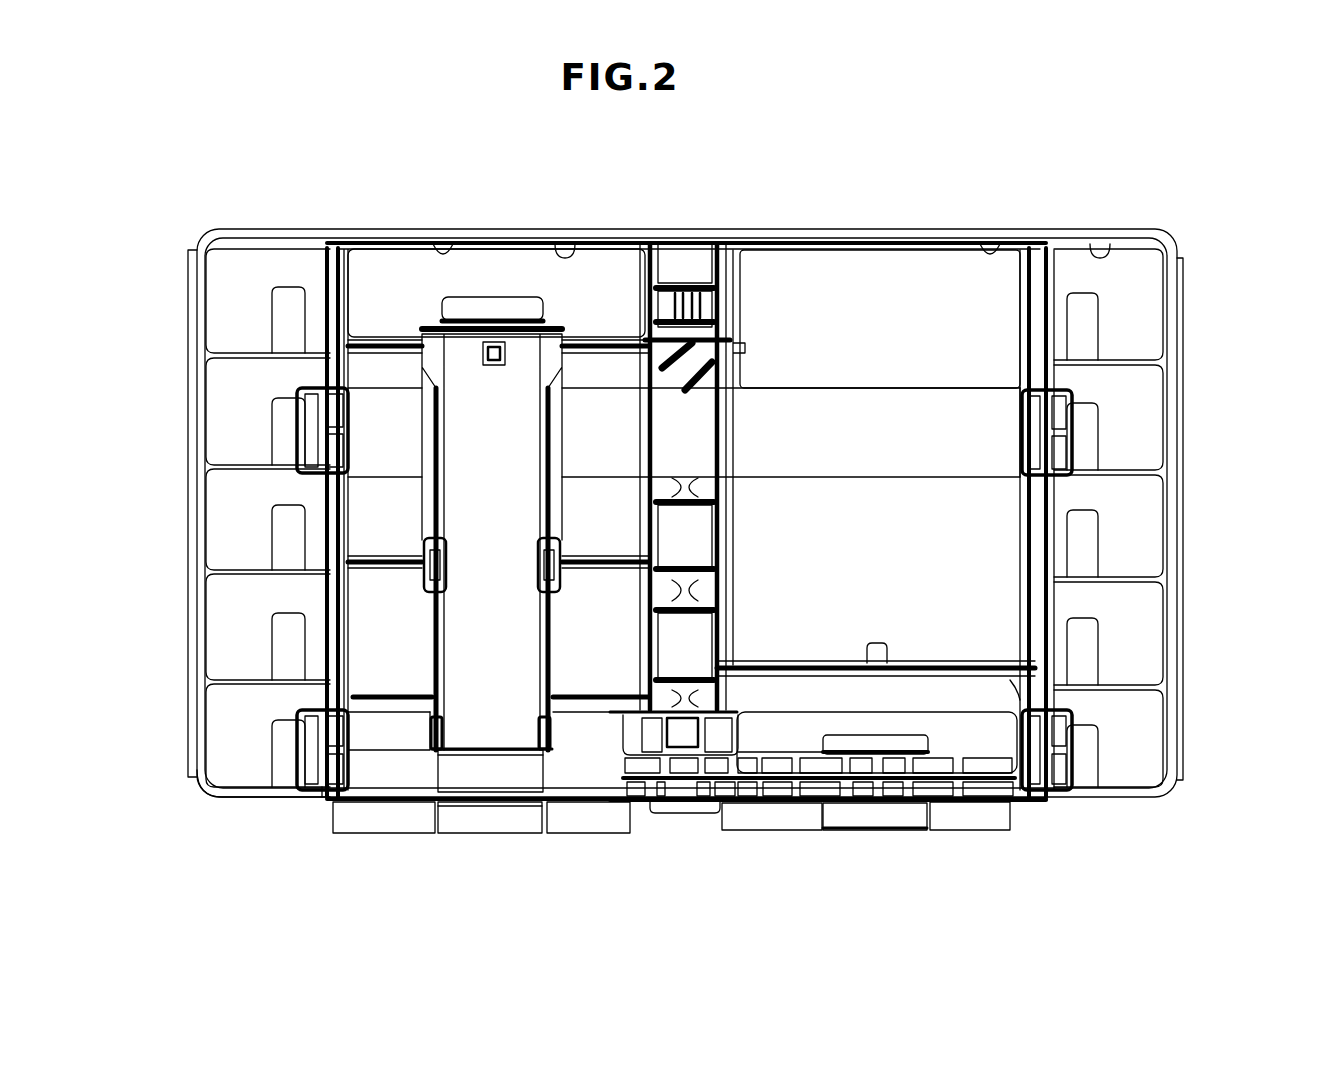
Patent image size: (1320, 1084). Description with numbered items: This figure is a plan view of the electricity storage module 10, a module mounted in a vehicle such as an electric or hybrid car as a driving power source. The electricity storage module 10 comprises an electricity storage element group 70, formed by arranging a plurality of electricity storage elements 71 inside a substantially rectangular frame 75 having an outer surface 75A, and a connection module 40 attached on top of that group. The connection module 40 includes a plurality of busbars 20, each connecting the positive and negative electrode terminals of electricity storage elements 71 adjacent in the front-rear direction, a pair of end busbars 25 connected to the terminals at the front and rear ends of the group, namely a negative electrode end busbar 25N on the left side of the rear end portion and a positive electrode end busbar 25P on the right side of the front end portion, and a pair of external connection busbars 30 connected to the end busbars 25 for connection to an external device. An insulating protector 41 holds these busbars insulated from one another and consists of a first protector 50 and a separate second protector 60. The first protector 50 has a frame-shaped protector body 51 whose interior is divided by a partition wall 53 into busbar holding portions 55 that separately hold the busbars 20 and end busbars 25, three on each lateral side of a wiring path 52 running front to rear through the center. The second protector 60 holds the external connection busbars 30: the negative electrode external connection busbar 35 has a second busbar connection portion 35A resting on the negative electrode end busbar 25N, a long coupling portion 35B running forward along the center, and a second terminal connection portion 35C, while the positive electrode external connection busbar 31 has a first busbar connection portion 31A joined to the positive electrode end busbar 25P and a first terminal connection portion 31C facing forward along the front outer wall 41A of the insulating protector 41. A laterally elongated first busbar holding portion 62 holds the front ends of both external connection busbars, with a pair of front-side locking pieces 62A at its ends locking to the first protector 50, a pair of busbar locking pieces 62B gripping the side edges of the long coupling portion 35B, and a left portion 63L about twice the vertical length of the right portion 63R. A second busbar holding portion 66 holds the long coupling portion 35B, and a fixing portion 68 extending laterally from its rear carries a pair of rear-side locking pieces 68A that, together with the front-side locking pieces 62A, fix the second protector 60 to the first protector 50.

The electricity storage module 10 is at (1226, 339).
The electricity storage element group 70 is at (1210, 289).
The electricity storage element 71 is at (236, 265).
The frame 75 is at (258, 797).
The outer surface 75A is at (288, 797).
The busbar 20 is at (375, 512).
The connection module 40 is at (1072, 280).
The first protector 50 is at (722, 849).
The protector body 51 is at (1047, 540).
The partition wall 53 is at (372, 337).
The busbar holding portion 55 is at (443, 243).
The end busbar 25 is at (713, 548).
The negative electrode end busbar 25N is at (590, 265).
The positive electrode end busbar 25P is at (985, 745).
The second busbar holding portion 66 is at (330, 350).
The rear-side locking piece 68A is at (300, 413).
The external connection busbar 30 is at (788, 548).
The negative electrode external connection busbar 35 is at (466, 548).
The second busbar connection portion 35A is at (496, 305).
The long coupling portion 35B is at (462, 668).
The second terminal connection portion 35C is at (505, 800).
The busbar locking piece 62B is at (433, 735).
The positive electrode external connection busbar 31 is at (938, 762).
The first busbar connection portion 31A is at (893, 740).
The first terminal connection portion 31C is at (868, 797).
The first busbar holding portion 62 is at (905, 783).
The front outer wall 41A is at (798, 797).
The wiring path 52 is at (683, 250).
The fixing portion 68 is at (765, 430).
The second protector 60 is at (650, 843).
The insulating protector 41 is at (637, 898).
The right portion 63R is at (770, 795).
The left portion 63L is at (403, 822).
The front-side locking piece 62A is at (1063, 763).